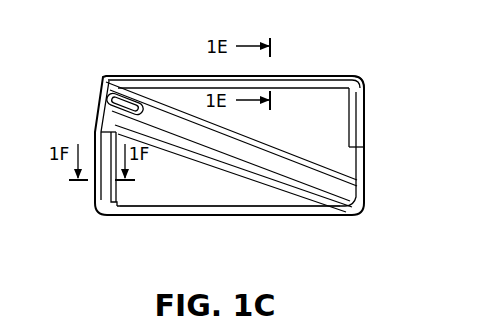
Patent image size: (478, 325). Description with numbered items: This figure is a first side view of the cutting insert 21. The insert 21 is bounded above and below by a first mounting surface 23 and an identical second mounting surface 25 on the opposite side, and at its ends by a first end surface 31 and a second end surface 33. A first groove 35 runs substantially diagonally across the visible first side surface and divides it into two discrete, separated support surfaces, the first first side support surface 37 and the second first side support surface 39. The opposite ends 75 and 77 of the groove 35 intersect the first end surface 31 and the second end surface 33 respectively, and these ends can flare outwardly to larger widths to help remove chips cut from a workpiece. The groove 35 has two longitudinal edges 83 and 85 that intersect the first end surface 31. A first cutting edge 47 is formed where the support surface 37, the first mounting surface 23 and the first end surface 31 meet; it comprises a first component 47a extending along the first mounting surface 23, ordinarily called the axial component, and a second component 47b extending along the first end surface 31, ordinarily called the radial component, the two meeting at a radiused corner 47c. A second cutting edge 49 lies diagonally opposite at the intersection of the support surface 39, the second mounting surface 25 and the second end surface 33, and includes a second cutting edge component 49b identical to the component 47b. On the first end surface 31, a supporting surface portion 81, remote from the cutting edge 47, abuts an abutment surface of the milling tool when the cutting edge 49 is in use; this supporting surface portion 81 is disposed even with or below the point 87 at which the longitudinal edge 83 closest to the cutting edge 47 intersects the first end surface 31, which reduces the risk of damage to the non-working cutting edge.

The insert 21 is at (360, 264).
The first mounting surface 23 is at (274, 74).
The second mounting surface 25 is at (301, 217).
The first end surface 31 is at (368, 137).
The second end surface 33 is at (92, 135).
The first groove 35 is at (172, 116).
The first first side support surface 37 is at (200, 90).
The second first side support surface 39 is at (188, 183).
The first cutting edge 47 is at (372, 89).
The first component 47a is at (322, 75).
The second component 47b is at (360, 108).
The radiused corner 47c is at (367, 90).
The second cutting edge 49 is at (142, 215).
The second cutting edge component 49b is at (93, 188).
The groove end 75 is at (368, 203).
The groove end 77 is at (98, 90).
The supporting surface portion 81 is at (372, 192).
The longitudinal edge 83 is at (302, 153).
The longitudinal edge 85 is at (357, 212).
The point 87 is at (350, 170).